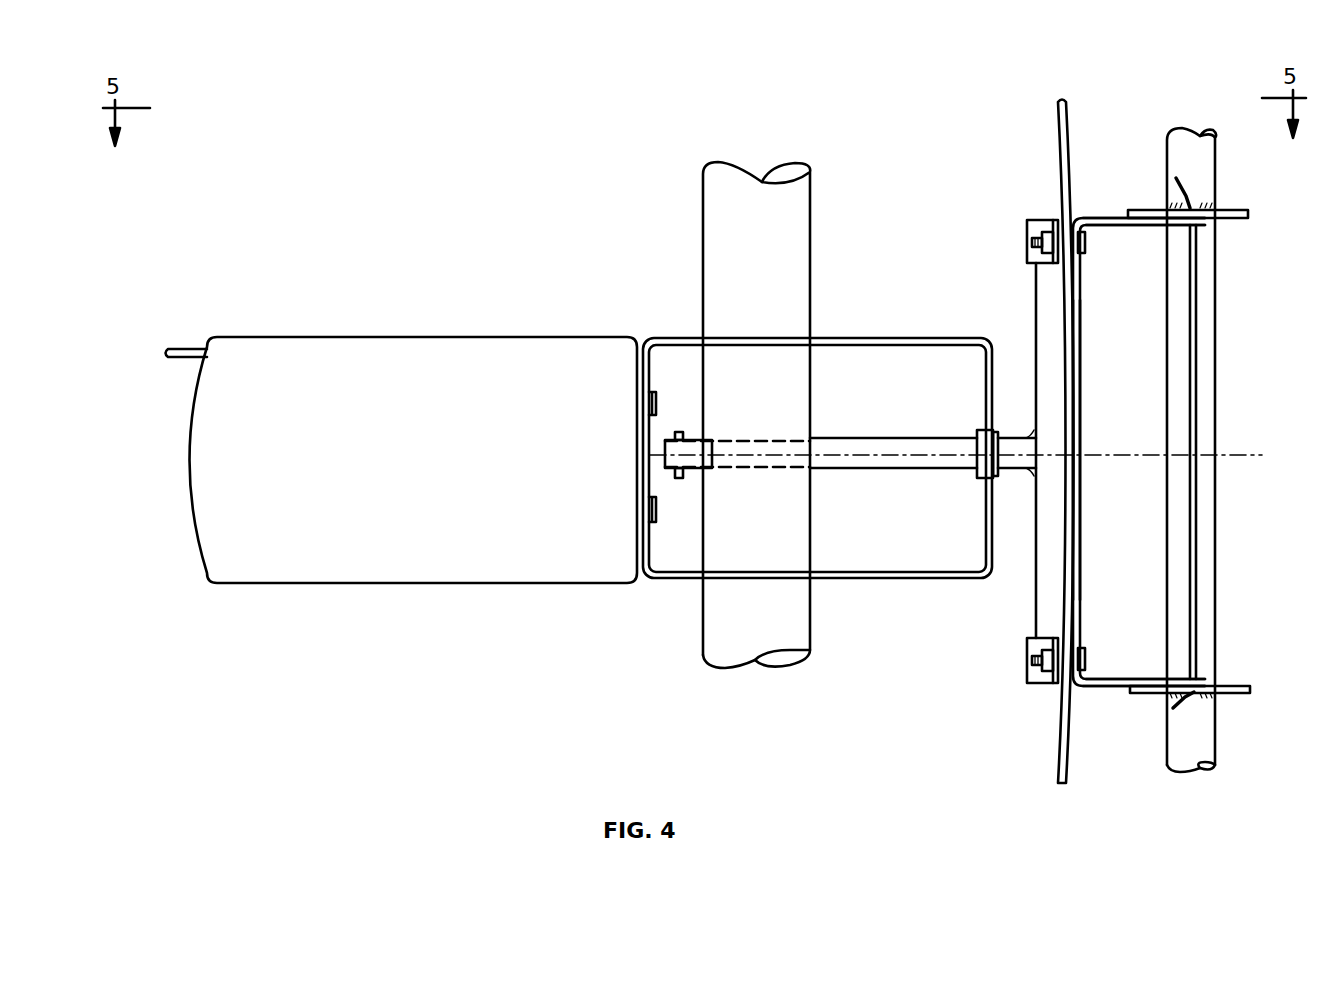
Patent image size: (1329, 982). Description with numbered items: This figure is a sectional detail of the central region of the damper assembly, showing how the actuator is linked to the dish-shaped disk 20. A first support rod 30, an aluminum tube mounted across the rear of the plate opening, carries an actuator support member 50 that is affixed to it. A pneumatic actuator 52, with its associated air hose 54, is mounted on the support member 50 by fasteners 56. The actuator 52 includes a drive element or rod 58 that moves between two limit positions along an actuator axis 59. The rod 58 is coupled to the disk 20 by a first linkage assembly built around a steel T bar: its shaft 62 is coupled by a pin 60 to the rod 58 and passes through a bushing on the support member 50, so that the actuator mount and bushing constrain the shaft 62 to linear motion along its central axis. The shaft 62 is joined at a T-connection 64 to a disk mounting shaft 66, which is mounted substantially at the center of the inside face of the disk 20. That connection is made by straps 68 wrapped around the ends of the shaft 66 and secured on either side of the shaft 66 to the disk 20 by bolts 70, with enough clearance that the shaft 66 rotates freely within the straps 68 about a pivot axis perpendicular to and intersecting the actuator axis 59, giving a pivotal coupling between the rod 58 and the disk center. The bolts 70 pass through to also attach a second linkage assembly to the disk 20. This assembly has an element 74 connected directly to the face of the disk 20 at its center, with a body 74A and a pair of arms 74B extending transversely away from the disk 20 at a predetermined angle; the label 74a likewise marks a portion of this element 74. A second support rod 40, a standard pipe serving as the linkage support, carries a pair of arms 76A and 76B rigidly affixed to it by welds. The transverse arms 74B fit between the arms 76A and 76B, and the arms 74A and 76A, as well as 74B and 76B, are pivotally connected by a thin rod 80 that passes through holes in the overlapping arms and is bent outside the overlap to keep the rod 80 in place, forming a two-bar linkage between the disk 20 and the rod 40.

The dish-shaped disk 20 is at (1071, 180).
The first support rod 30 is at (783, 265).
The second support rod 40 is at (1200, 180).
The actuator support member 50 is at (908, 340).
The pneumatic actuator 52 is at (472, 337).
The air hose 54 is at (180, 350).
The fasteners 56 is at (655, 393).
The drive element or rod 58 is at (665, 452).
The actuator axis 59 is at (910, 456).
The pin 60 is at (680, 480).
The shaft 62 is at (757, 441).
The T-connection 64 is at (995, 480).
The disk mounting shaft 66 is at (1042, 295).
The straps 68 is at (1028, 230).
The bolts 70 is at (1085, 654).
The element 74 is at (1098, 688).
The body 74A is at (1135, 679).
The arms 74B is at (1100, 228).
The bracket vertical leg 74a is at (1082, 450).
The arm 76A is at (1240, 686).
The arm 76B is at (1249, 212).
The thin rod 80 is at (1198, 345).